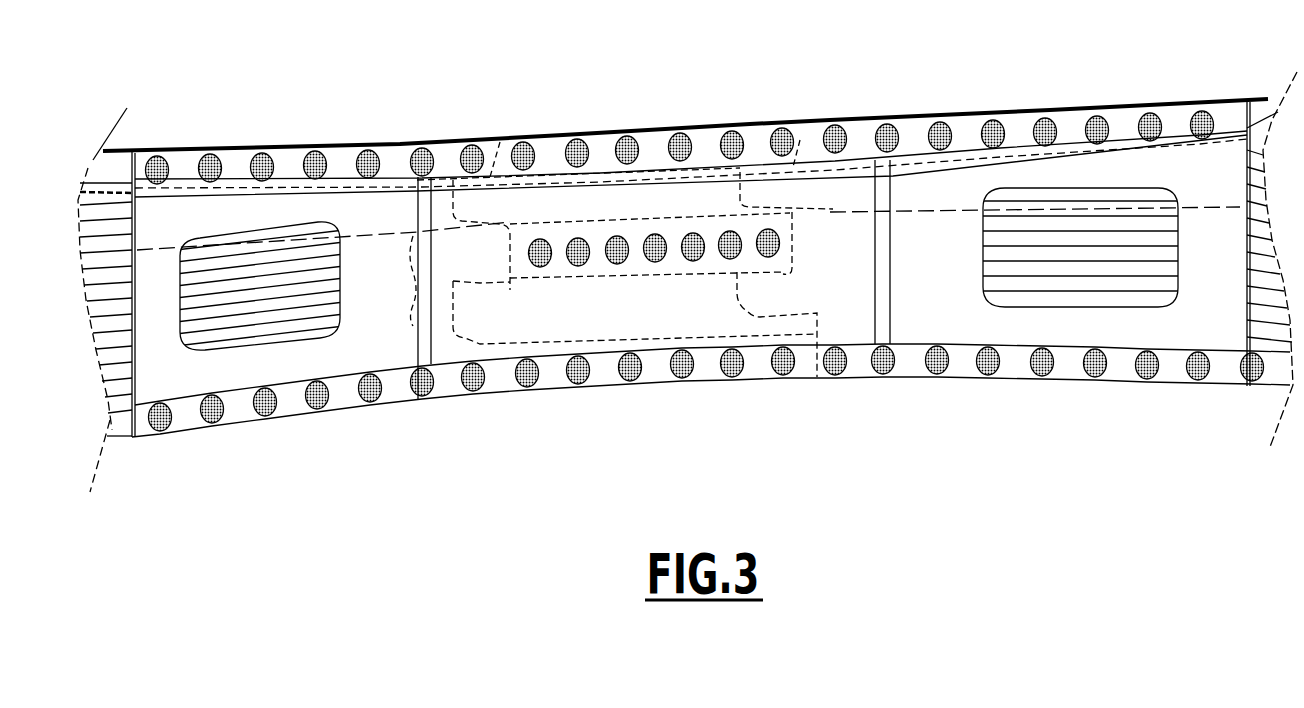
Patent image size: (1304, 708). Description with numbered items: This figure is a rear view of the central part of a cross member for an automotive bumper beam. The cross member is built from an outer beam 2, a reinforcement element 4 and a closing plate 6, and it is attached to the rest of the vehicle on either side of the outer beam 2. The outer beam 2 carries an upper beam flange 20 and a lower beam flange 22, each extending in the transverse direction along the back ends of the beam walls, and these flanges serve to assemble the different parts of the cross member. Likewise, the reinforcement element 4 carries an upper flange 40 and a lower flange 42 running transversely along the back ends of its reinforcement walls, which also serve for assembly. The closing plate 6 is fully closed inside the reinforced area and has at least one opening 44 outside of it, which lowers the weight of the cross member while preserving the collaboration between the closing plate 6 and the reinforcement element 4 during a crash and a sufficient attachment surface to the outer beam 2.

The outer beam 2 is at (188, 157).
The reinforcement element 4 is at (630, 313).
The closing plate 6 is at (232, 185).
The upper beam flange 20 is at (563, 135).
The lower beam flange 22 is at (557, 380).
The upper flange 40 is at (750, 123).
The lower flange 42 is at (730, 363).
The opening 44 is at (270, 293).